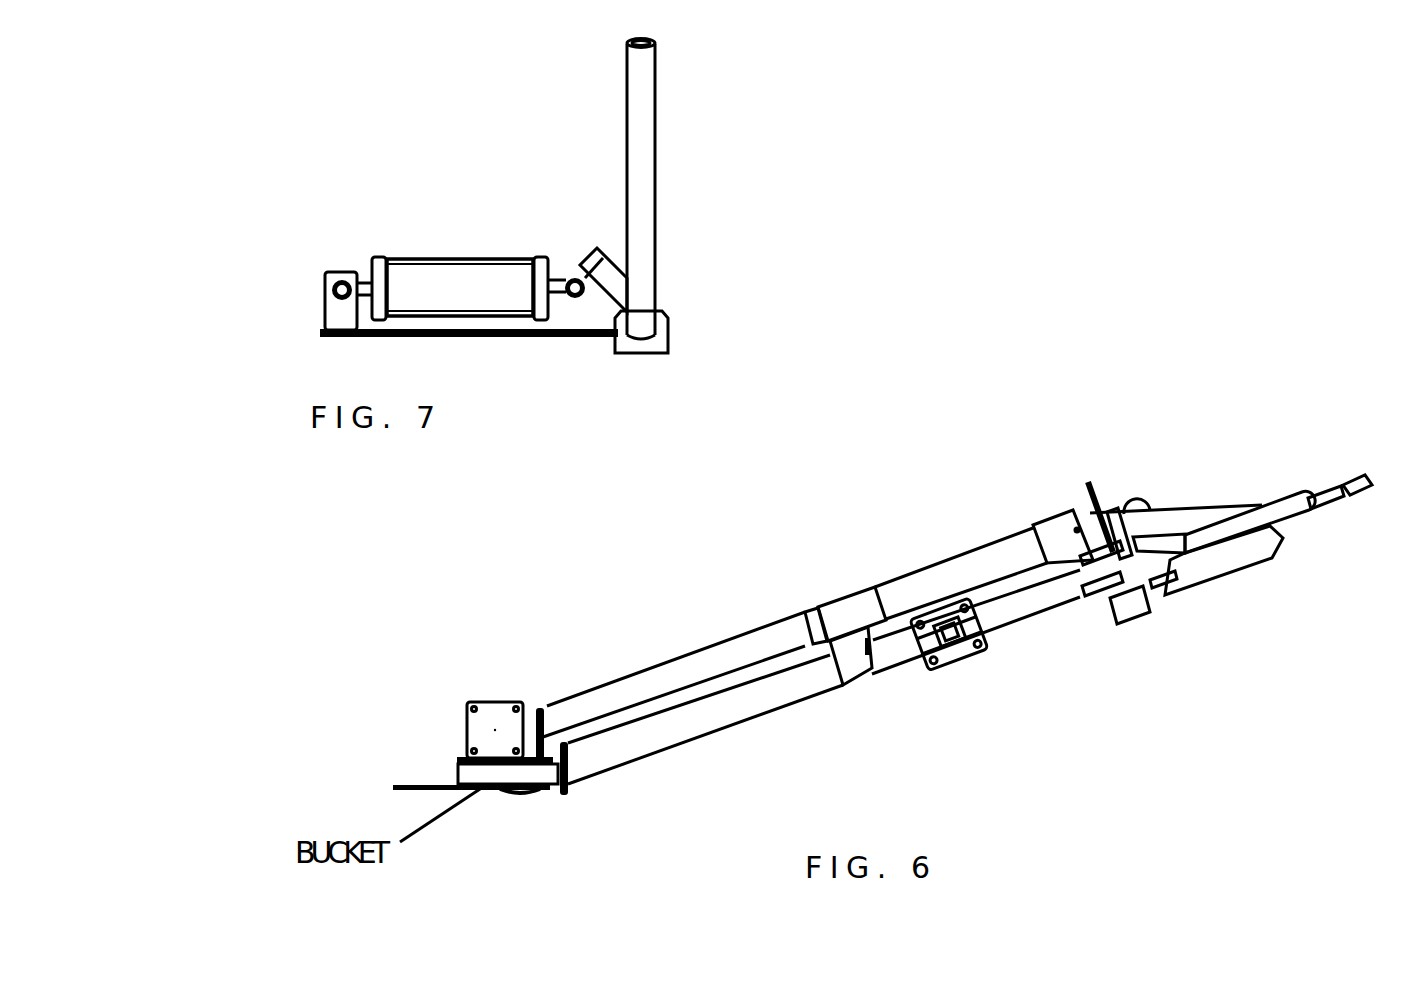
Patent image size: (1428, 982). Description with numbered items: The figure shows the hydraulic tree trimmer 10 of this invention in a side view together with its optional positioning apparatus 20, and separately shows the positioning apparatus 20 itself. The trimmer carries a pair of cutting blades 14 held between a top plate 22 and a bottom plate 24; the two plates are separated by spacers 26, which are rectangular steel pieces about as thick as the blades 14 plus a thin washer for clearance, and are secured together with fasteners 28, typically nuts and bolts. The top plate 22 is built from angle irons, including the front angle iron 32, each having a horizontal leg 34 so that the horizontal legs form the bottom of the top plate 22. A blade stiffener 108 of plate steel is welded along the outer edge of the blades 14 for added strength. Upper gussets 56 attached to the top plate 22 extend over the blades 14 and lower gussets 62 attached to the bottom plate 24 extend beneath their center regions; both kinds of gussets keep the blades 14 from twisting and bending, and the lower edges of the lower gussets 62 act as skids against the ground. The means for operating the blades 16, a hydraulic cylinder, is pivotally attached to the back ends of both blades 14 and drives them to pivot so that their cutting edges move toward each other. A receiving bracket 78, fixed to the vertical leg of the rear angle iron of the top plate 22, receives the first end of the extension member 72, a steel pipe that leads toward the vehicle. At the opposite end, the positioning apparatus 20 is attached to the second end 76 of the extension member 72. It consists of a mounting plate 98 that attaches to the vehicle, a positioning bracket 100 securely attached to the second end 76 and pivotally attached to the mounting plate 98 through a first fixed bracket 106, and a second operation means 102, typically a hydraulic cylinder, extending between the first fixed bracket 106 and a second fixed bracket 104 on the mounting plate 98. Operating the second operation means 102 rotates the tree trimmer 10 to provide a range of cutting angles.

In FIG. 6, the hydraulic tree trimmer 10 is at (912, 605).
In FIG. 6, the cutting blades 14 is at (1362, 488).
In FIG. 6, the means for operating the blades 16 is at (952, 660).
In FIG. 7, the positioning apparatus 20 is at (470, 221).
In FIG. 6, the positioning apparatus 20 is at (485, 761).
In FIG. 6, the top plate 22 is at (1138, 517).
In FIG. 6, the bottom plate 24 is at (1138, 583).
In FIG. 6, the spacers 26 is at (1090, 583).
In FIG. 6, the fasteners 28 is at (1170, 572).
In FIG. 6, the front angle iron 32 is at (1110, 530).
In FIG. 6, the horizontal leg 34 is at (1103, 513).
In FIG. 6, the upper gussets 56 is at (1195, 515).
In FIG. 6, the lower gussets 62 is at (1260, 553).
In FIG. 7, the extension member 72 is at (648, 113).
In FIG. 6, the extension member 72 is at (698, 660).
In FIG. 7, the second end of the extension member 76 is at (645, 218).
In FIG. 6, the receiving bracket 78 is at (1052, 515).
In FIG. 7, the mounting plate 98 is at (553, 334).
In FIG. 7, the positioning bracket 100 is at (622, 280).
In FIG. 7, the second operation means 102 is at (475, 270).
In FIG. 6, the second operation means 102 is at (492, 717).
In FIG. 7, the second fixed bracket 104 is at (335, 308).
In FIG. 7, the first fixed bracket 106 is at (660, 342).
In FIG. 6, the blade stiffener 108 is at (1300, 490).